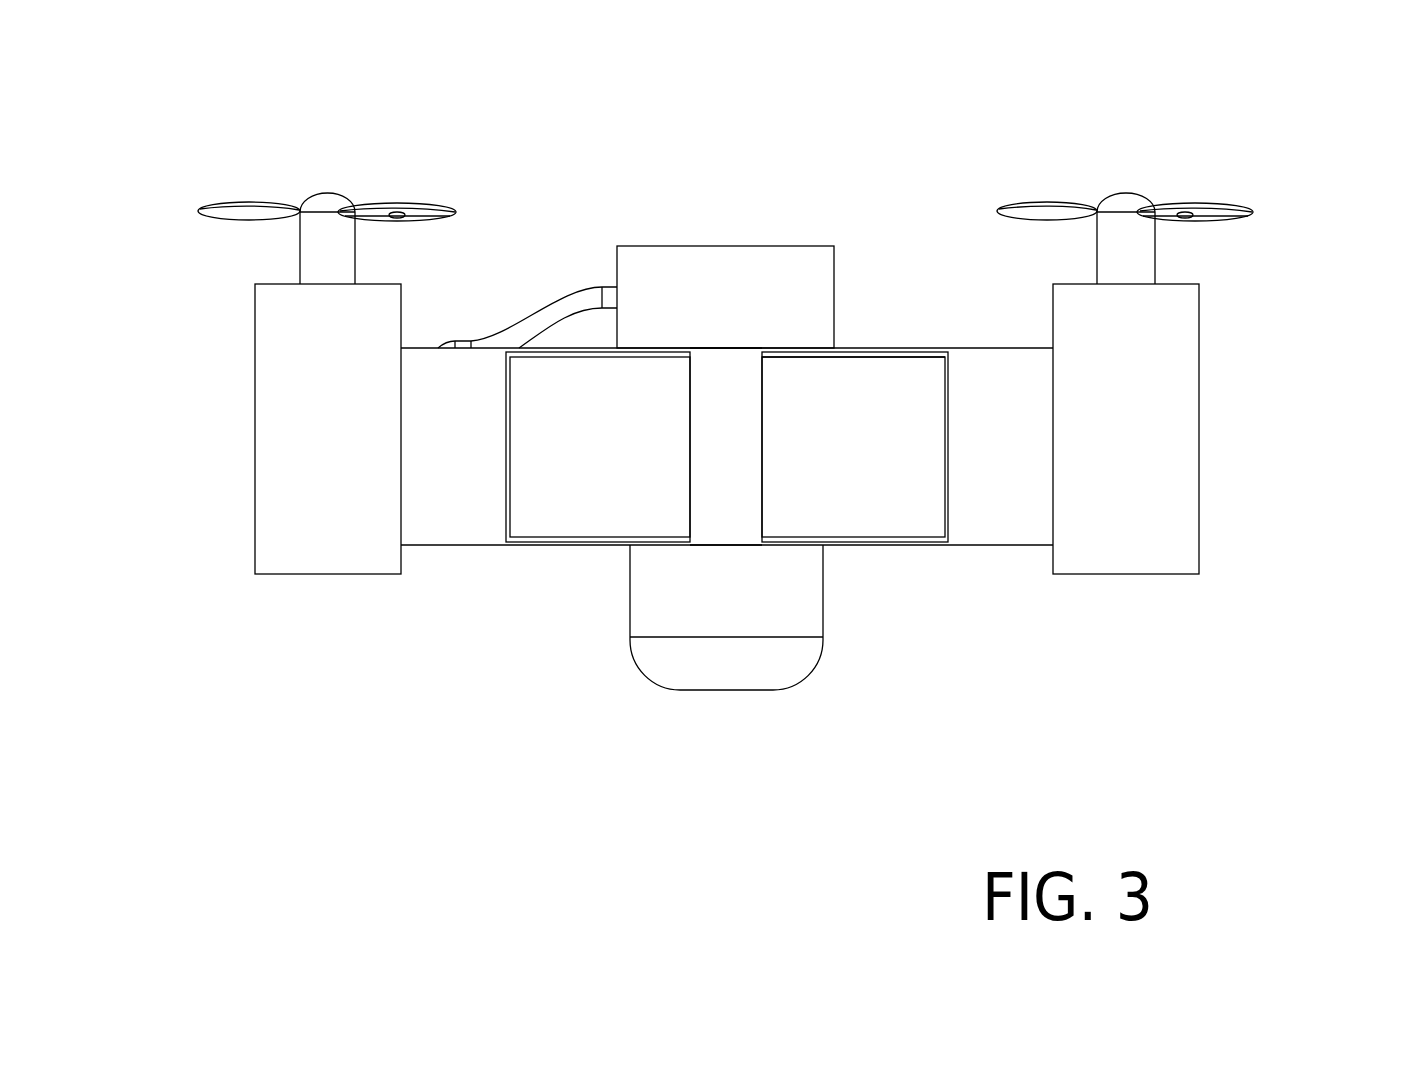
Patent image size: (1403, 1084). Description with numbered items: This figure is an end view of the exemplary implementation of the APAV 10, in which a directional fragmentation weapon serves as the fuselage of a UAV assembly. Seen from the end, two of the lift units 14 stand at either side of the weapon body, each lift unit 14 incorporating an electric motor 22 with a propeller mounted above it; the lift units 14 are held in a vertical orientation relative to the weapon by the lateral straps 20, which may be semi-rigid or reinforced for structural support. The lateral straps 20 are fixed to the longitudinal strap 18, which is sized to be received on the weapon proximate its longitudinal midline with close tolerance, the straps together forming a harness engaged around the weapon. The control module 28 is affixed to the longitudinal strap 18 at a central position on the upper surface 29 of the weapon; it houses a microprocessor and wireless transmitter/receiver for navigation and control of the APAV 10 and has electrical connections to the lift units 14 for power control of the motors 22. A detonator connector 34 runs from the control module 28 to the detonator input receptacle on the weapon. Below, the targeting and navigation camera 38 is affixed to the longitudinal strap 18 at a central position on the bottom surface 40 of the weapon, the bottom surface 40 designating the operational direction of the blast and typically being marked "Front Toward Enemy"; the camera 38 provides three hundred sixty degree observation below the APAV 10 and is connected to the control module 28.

The APAV 10 is at (388, 755).
The lift unit 14 is at (283, 522).
The longitudinal strap 18 is at (720, 378).
The lateral strap 20 is at (551, 541).
The electric motor 22 is at (263, 207).
The control module 28 is at (780, 246).
The upper surface 29 is at (897, 357).
The detonator connector 34 is at (535, 318).
The targeting and navigation camera 38 is at (720, 607).
The bottom surface 40 is at (870, 537).